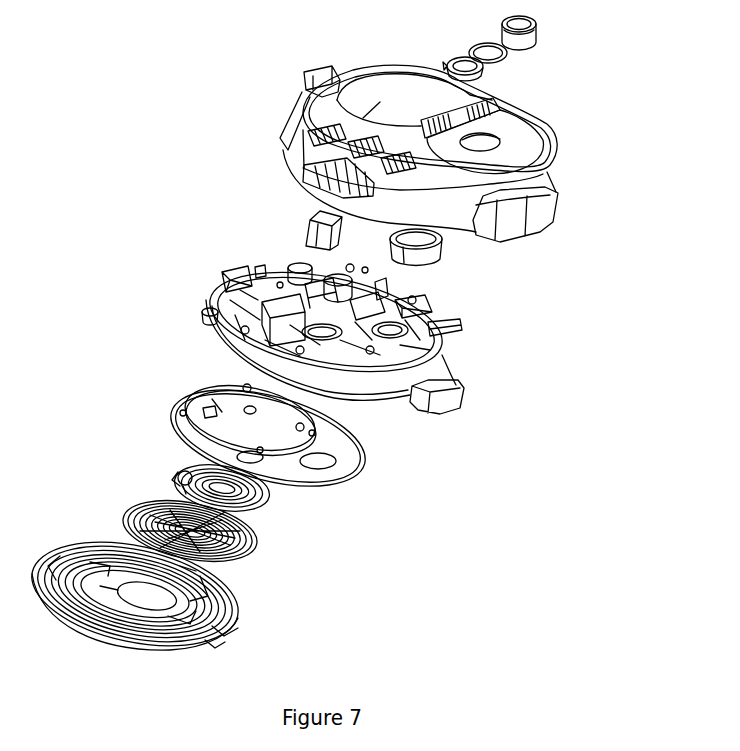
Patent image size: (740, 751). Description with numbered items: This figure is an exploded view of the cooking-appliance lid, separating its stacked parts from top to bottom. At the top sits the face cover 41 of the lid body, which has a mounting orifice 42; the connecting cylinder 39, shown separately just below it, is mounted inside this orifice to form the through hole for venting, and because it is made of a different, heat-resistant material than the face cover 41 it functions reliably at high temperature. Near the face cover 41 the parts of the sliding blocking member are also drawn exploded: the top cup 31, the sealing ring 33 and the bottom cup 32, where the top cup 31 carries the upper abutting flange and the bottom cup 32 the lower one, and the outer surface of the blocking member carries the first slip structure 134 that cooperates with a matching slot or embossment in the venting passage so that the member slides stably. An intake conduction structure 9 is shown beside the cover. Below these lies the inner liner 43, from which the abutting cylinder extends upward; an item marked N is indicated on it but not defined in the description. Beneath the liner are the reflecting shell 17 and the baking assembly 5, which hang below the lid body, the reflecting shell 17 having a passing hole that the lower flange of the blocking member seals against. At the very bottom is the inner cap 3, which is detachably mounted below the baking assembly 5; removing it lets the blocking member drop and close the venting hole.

The inner cap 3 is at (233, 605).
The baking assembly 5 is at (143, 507).
The intake conduction structure 9 is at (313, 222).
The reflecting shell 17 is at (200, 390).
The top cup 31 is at (502, 30).
The bottom cup 32 is at (480, 72).
The sealing ring 33 is at (507, 58).
The connecting cylinder 39 is at (427, 253).
The face cover 41 is at (327, 103).
The mounting orifice 42 is at (540, 128).
The inner liner 43 is at (210, 303).
The first slip structure 134 is at (533, 42).
The assembly N is at (410, 302).